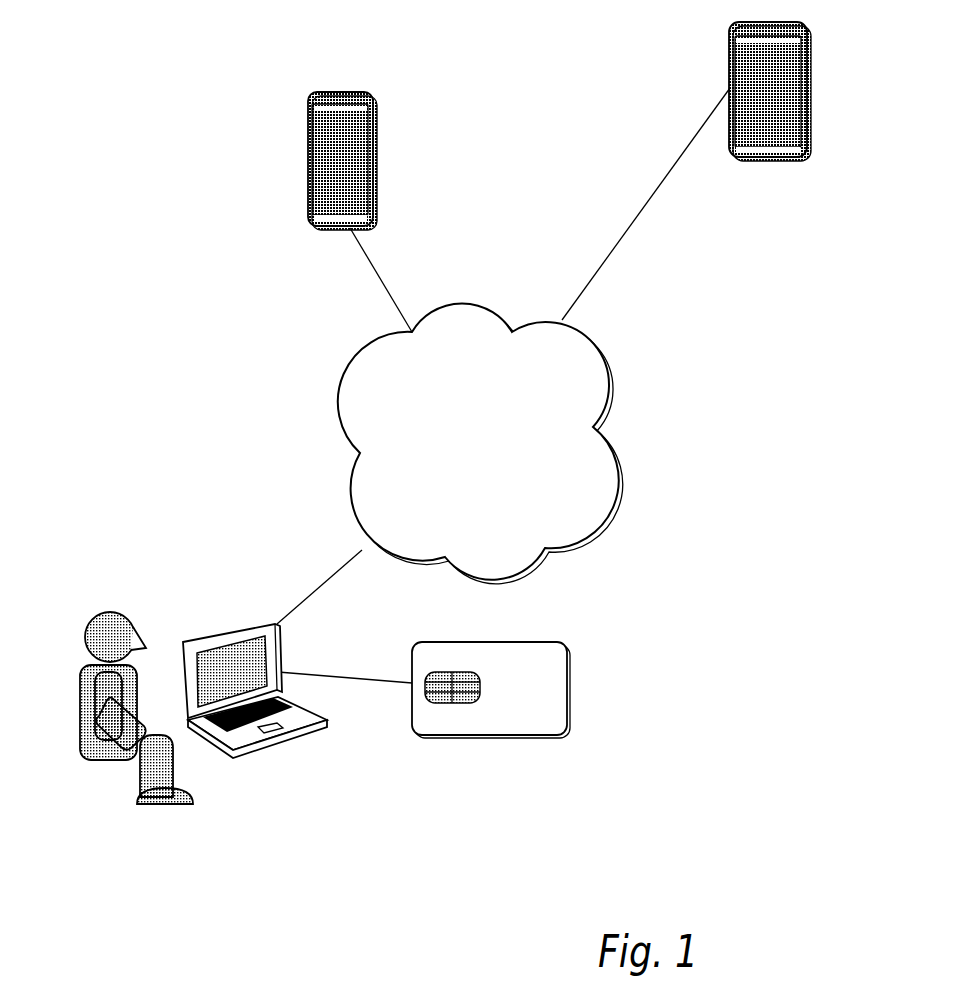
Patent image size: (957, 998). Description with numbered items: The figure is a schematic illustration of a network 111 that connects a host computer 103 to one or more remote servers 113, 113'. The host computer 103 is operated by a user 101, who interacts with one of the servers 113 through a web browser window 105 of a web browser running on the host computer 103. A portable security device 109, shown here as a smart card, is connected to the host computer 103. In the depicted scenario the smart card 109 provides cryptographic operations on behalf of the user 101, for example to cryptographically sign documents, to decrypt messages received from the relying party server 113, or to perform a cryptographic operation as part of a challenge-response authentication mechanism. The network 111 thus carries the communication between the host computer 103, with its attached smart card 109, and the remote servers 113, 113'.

The user 101 is at (80, 712).
The host computer 103 is at (297, 724).
The web browser window 105 is at (267, 665).
The portable security device 109 is at (565, 722).
The network 111 is at (333, 397).
The remote server 113 is at (378, 161).
The remote server 113' is at (781, 115).